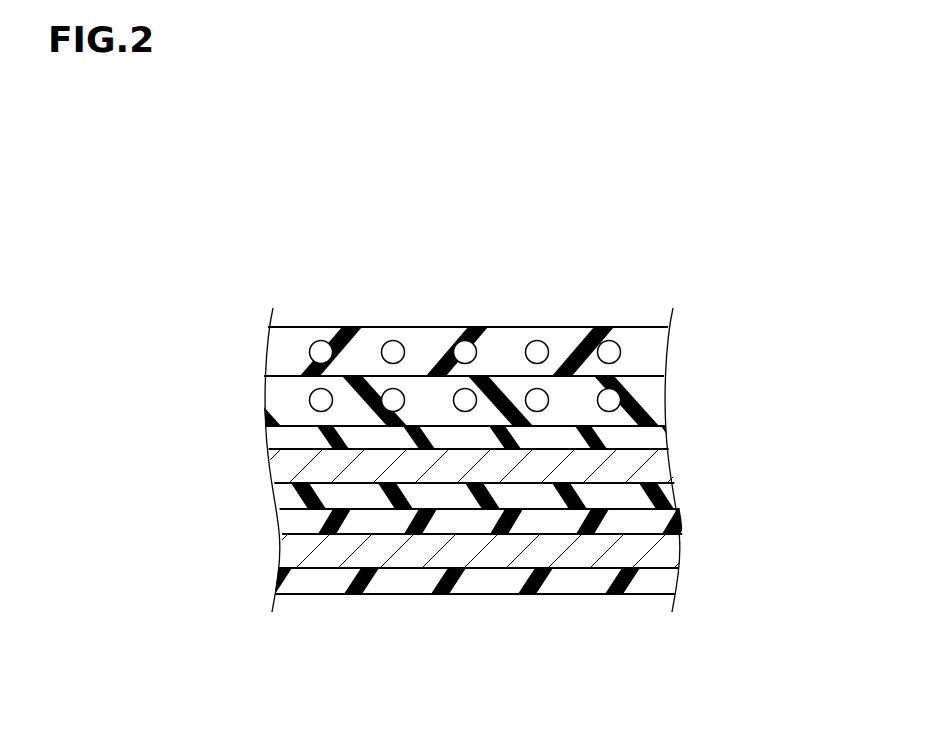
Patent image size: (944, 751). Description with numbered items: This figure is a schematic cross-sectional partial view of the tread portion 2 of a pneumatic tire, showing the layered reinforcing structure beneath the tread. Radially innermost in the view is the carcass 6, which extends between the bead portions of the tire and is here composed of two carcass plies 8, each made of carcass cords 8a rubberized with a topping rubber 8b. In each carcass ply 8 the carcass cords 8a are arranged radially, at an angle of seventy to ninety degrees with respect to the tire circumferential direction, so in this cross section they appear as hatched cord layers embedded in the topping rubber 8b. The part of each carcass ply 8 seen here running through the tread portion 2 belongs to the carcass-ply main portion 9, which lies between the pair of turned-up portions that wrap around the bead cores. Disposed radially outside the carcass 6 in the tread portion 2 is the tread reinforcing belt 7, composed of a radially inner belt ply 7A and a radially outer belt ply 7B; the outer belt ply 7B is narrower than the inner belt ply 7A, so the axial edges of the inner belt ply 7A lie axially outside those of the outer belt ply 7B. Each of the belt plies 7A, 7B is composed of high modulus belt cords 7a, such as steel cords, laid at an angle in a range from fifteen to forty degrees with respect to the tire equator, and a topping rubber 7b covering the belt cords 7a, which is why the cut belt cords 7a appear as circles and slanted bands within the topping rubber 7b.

The tread portion 2 is at (657, 244).
The carcass 6 is at (776, 495).
The tread reinforcing belt 7 is at (160, 293).
The radially inner belt ply 7A is at (283, 402).
The radially outer belt ply 7B is at (287, 350).
The belt cords 7a is at (611, 400).
The topping rubber 7b is at (648, 390).
The carcass ply 8 is at (160, 420).
The carcass cords 8a is at (290, 465).
The topping rubber 8b is at (292, 440).
The carcass-ply main portion 9 is at (683, 467).